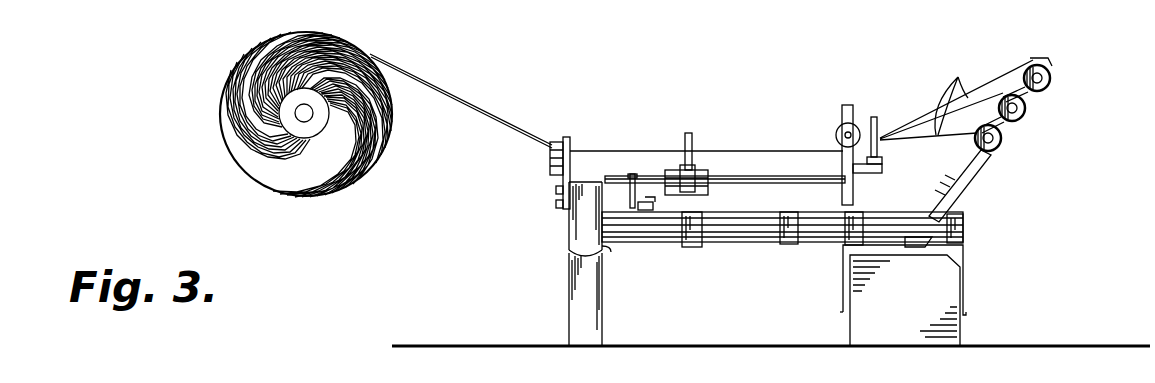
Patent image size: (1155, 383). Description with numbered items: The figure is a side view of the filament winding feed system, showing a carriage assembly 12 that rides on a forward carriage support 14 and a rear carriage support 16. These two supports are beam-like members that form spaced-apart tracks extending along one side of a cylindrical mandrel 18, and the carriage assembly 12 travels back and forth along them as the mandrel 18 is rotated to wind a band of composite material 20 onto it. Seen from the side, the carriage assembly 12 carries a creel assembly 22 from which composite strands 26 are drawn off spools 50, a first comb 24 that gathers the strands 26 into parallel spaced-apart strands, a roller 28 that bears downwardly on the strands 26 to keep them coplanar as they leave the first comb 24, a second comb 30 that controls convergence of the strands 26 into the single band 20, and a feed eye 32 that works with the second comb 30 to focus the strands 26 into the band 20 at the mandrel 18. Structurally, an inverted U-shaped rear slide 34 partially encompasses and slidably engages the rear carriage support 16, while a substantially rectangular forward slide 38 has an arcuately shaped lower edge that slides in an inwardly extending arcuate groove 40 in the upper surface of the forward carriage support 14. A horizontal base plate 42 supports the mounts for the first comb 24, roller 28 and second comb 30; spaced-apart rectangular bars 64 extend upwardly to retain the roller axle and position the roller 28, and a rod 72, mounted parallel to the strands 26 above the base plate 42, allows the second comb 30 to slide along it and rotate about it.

The carriage assembly 12 is at (750, 247).
The forward carriage support 14 is at (604, 321).
The rear carriage support 16 is at (916, 320).
The cylindrical mandrel 18 is at (388, 134).
The band of composite material 20 is at (460, 97).
The creel assembly 22 is at (1010, 135).
The first comb 24 is at (888, 126).
The composite strands 26 is at (959, 82).
The roller 28 is at (839, 128).
The second comb 30 is at (706, 139).
The feed eye 32 is at (548, 168).
The rear slide 34 is at (966, 280).
The forward slide 38 is at (580, 242).
The arcuate groove 40 is at (604, 252).
The base plate 42 is at (721, 213).
The spools 50 is at (1051, 80).
The rectangular bars 64 is at (856, 108).
The rod 72 is at (762, 179).